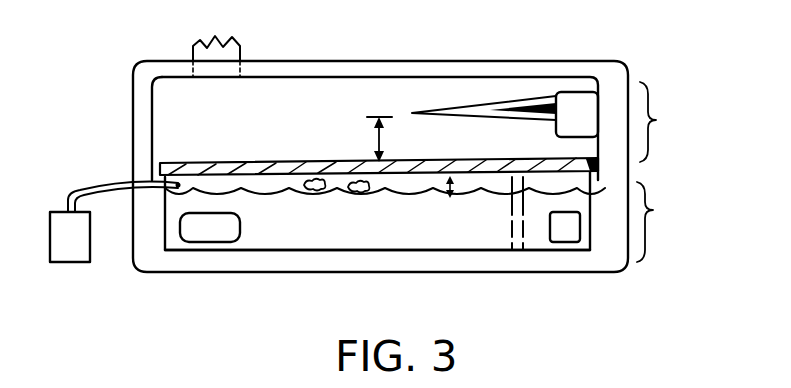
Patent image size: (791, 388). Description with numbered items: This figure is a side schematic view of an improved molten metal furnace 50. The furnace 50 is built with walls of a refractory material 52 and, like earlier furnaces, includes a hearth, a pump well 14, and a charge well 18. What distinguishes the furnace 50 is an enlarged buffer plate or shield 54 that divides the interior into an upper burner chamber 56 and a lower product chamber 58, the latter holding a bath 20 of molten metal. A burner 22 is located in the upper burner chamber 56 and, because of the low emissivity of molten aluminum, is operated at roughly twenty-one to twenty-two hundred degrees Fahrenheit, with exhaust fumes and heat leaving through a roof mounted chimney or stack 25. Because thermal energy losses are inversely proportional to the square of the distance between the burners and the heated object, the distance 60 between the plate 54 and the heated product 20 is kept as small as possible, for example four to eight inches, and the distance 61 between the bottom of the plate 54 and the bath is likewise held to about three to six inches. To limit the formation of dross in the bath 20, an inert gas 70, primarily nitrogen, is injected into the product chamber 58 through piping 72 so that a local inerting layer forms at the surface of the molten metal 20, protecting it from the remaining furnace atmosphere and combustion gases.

The molten metal furnace 50 is at (79, 87).
The refractory material 52 is at (172, 272).
The buffer plate or shield 54 is at (226, 162).
The upper burner chamber 56 is at (666, 120).
The lower product chamber 58 is at (664, 210).
The distance 60 is at (376, 138).
The distance 61 is at (452, 187).
The burner 22 is at (576, 98).
The chimney or stack 25 is at (240, 46).
The piping 72 is at (82, 197).
The inert gas 70 is at (365, 193).
The bath of molten metal 20 is at (308, 241).
The charge well 18 is at (370, 243).
The pump well 14 is at (553, 245).